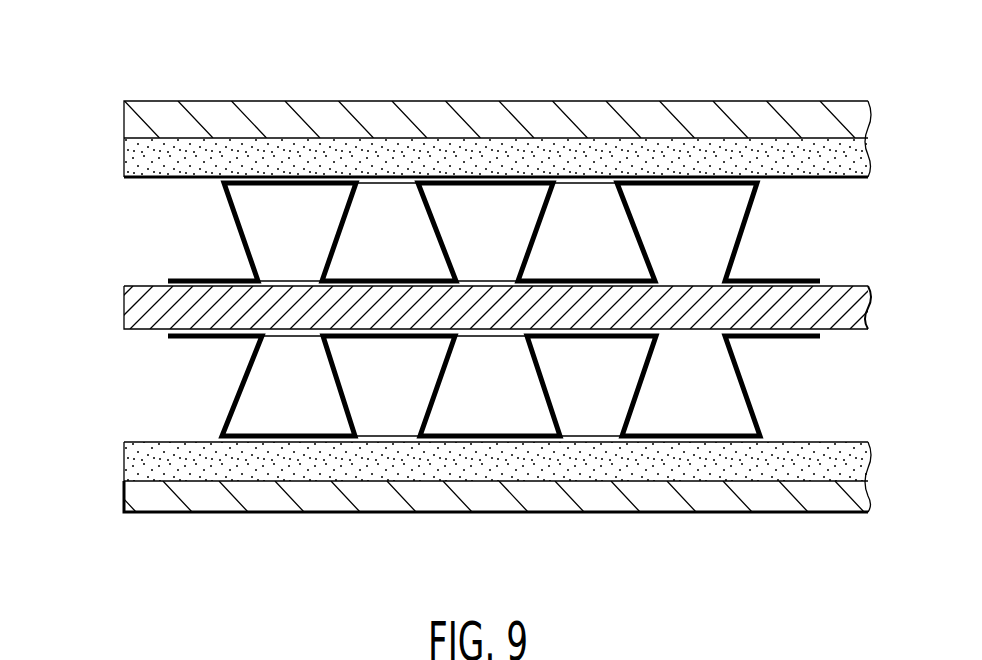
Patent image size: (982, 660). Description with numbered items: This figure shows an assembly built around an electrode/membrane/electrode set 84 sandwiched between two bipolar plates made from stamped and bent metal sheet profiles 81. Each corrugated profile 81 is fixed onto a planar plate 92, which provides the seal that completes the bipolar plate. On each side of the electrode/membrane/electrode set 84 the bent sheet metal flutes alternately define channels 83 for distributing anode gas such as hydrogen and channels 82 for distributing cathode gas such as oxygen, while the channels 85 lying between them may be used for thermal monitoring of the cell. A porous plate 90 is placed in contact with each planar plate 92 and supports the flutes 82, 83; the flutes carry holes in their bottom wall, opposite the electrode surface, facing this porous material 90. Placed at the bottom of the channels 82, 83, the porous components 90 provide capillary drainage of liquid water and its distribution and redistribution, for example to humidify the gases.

The corrugated core sheet 81 is at (733, 247).
The cathode gas channel 82 is at (293, 217).
The anode gas channel 83 is at (282, 412).
The electrode/membrane/electrode set 84 is at (188, 313).
The thermal monitoring channel 85 is at (388, 217).
The porous plate 90 is at (167, 160).
The planar plate 92 is at (165, 110).